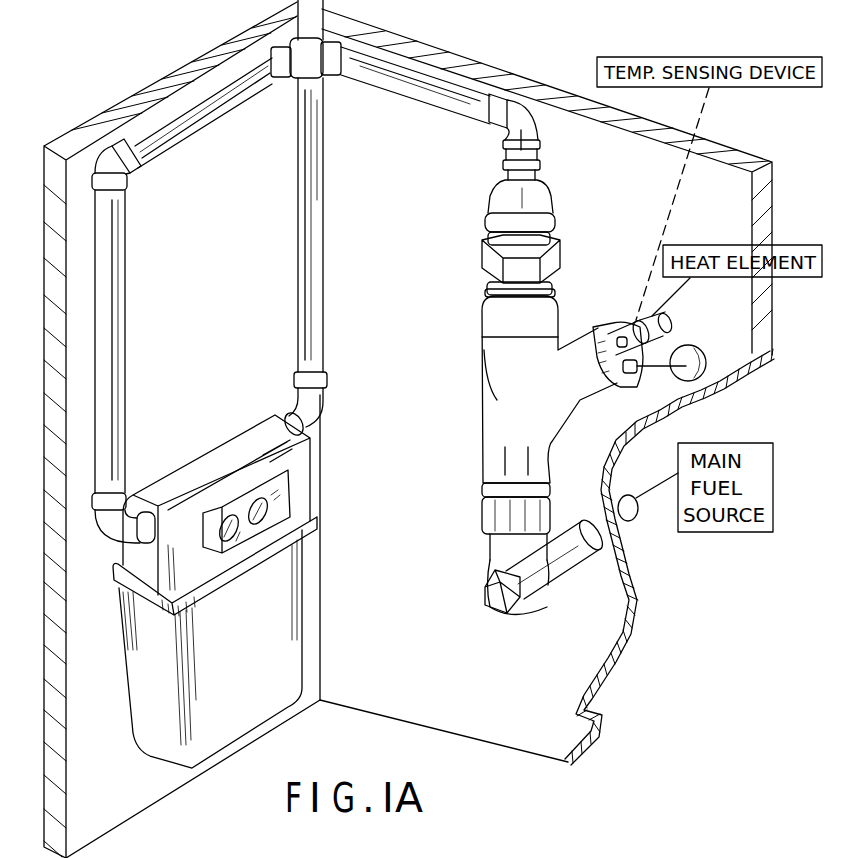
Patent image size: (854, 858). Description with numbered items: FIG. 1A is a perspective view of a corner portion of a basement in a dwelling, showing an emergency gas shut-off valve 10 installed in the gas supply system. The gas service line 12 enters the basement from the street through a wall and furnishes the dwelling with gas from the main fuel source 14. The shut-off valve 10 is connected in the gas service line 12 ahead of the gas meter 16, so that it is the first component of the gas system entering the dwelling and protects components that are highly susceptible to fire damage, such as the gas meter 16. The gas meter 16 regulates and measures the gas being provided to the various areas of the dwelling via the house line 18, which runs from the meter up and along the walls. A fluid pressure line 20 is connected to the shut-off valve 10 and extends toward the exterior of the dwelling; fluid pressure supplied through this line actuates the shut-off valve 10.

The emergency gas shut-off valve 10 is at (587, 203).
The gas service line 12 is at (447, 101).
The main fuel source 14 is at (688, 443).
The gas meter 16 is at (203, 665).
The house line 18 is at (310, 210).
The fluid pressure line 20 is at (662, 346).